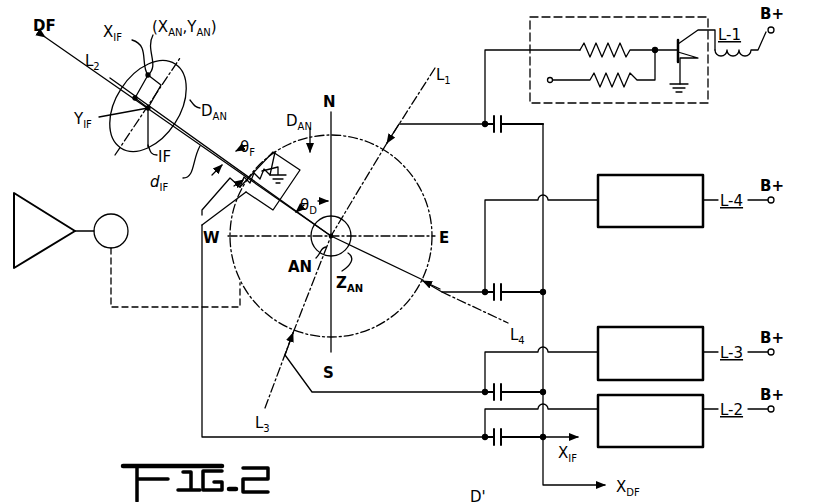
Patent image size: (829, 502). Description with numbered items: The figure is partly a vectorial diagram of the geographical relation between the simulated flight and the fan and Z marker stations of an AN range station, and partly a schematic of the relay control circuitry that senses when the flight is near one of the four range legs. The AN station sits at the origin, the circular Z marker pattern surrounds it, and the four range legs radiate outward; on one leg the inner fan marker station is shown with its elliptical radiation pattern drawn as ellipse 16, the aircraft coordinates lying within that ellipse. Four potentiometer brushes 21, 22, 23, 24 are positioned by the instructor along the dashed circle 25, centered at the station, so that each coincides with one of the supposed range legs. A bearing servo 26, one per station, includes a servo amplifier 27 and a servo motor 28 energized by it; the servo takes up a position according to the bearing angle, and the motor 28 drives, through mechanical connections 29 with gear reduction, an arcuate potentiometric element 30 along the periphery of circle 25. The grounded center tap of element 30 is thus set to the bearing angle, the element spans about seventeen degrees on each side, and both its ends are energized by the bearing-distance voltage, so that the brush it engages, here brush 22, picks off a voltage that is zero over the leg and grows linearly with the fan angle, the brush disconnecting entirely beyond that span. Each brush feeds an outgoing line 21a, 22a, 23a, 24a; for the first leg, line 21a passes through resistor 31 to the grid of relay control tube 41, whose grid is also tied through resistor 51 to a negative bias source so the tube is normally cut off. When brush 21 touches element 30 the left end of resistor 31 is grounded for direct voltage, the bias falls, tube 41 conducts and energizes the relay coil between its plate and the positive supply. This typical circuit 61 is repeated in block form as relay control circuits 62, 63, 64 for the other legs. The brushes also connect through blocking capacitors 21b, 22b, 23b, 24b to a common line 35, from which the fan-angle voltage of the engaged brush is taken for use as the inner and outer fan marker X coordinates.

The ellipse 16 is at (138, 151).
The potentiometer brush 21 is at (400, 138).
The outgoing line 21a is at (430, 124).
The blocking capacitor 21b is at (497, 135).
The potentiometer brush 22 is at (224, 201).
The outgoing line 22a is at (205, 355).
The blocking capacitor 22b is at (505, 448).
The potentiometer brush 23 is at (290, 345).
The outgoing line 23a is at (425, 392).
The blocking capacitor 23b is at (501, 381).
The potentiometer brush 24 is at (430, 292).
The outgoing line 24a is at (485, 260).
The blocking capacitor 24b is at (500, 280).
The dashed circle 25 is at (386, 320).
The bearing servo 26 is at (78, 208).
The servo amplifier 27 is at (38, 250).
The servo motor 28 is at (128, 228).
The mechanical connections 29 is at (140, 307).
The arcuate potentiometric element 30 is at (284, 151).
The resistor 31 is at (590, 47).
The common line 35 is at (543, 270).
The relay control tube 41 is at (673, 40).
The resistor 51 is at (610, 77).
The relay control circuit 61 is at (625, 103).
The relay control circuit 62 is at (660, 447).
The relay control circuit 63 is at (660, 327).
The relay control circuit 64 is at (665, 175).